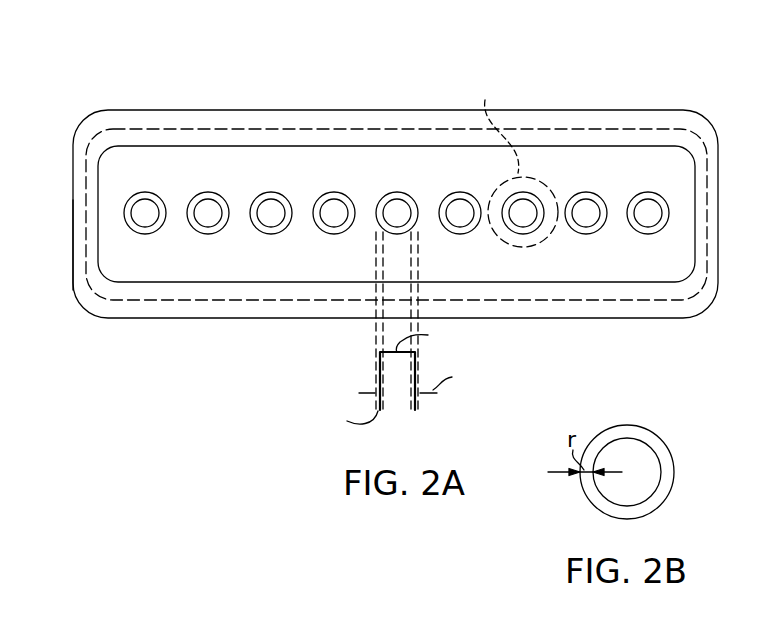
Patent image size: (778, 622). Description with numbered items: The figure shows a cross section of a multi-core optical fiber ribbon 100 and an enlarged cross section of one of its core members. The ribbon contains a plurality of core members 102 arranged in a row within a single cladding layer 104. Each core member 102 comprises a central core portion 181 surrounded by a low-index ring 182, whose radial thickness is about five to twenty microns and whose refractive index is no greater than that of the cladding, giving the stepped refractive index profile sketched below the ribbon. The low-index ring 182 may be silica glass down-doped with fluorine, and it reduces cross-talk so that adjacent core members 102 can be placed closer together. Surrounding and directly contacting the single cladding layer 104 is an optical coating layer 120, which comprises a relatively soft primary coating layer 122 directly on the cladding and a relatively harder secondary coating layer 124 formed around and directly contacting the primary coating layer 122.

In FIG. 2A, the multi-core optical fiber ribbon 100 is at (395, 231).
In FIG. 2A, the core member 102 is at (118, 210).
In FIG. 2B, the core member 102 is at (640, 438).
In FIG. 2A, the single cladding layer 104 is at (703, 153).
In FIG. 2A, the optical coating layer 120 is at (123, 110).
In FIG. 2A, the primary coating layer 122 is at (272, 137).
In FIG. 2A, the secondary coating layer 124 is at (78, 250).
In FIG. 2B, the central core portion 181 is at (602, 503).
In FIG. 2B, the low-index ring 182 is at (675, 455).